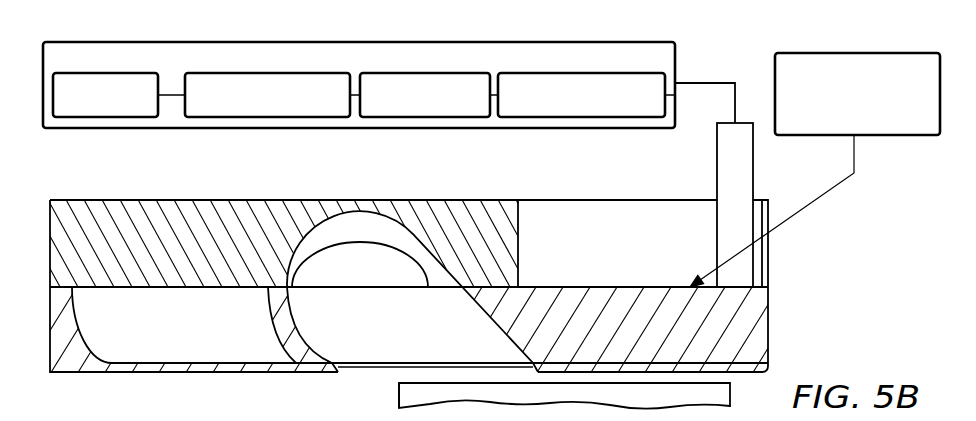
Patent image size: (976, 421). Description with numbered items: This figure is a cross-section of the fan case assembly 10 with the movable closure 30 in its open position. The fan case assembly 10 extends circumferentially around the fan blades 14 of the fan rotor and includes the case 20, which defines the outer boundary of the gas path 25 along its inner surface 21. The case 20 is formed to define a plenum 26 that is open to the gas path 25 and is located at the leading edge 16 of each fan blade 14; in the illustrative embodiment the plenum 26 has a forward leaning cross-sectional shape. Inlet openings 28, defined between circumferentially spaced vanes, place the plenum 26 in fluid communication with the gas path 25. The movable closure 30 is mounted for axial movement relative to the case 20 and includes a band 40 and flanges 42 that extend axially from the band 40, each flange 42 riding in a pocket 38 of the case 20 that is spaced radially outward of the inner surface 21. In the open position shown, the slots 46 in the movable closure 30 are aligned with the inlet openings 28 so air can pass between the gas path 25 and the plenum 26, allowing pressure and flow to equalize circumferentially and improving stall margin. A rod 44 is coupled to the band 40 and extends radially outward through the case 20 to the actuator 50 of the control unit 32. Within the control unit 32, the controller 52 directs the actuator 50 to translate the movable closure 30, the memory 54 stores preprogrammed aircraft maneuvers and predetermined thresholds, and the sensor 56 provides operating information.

The fan case assembly 10 is at (125, 195).
The fan blades 14 is at (737, 392).
The leading edge 16 is at (398, 405).
The case 20 is at (210, 197).
The inner surface 21 is at (137, 371).
The gas path 25 is at (229, 407).
The plenum 26 is at (380, 263).
The inlet openings 28 is at (398, 369).
The movable closure 30 is at (885, 136).
The control unit 32 is at (678, 53).
The pockets 38 is at (113, 327).
The band 40 is at (775, 315).
The flanges 42 is at (263, 325).
The rod 44 is at (753, 142).
The slots 46 is at (366, 312).
The actuator 50 is at (592, 73).
The controller 52 is at (183, 79).
The memory 54 is at (417, 73).
The sensor 56 is at (98, 73).